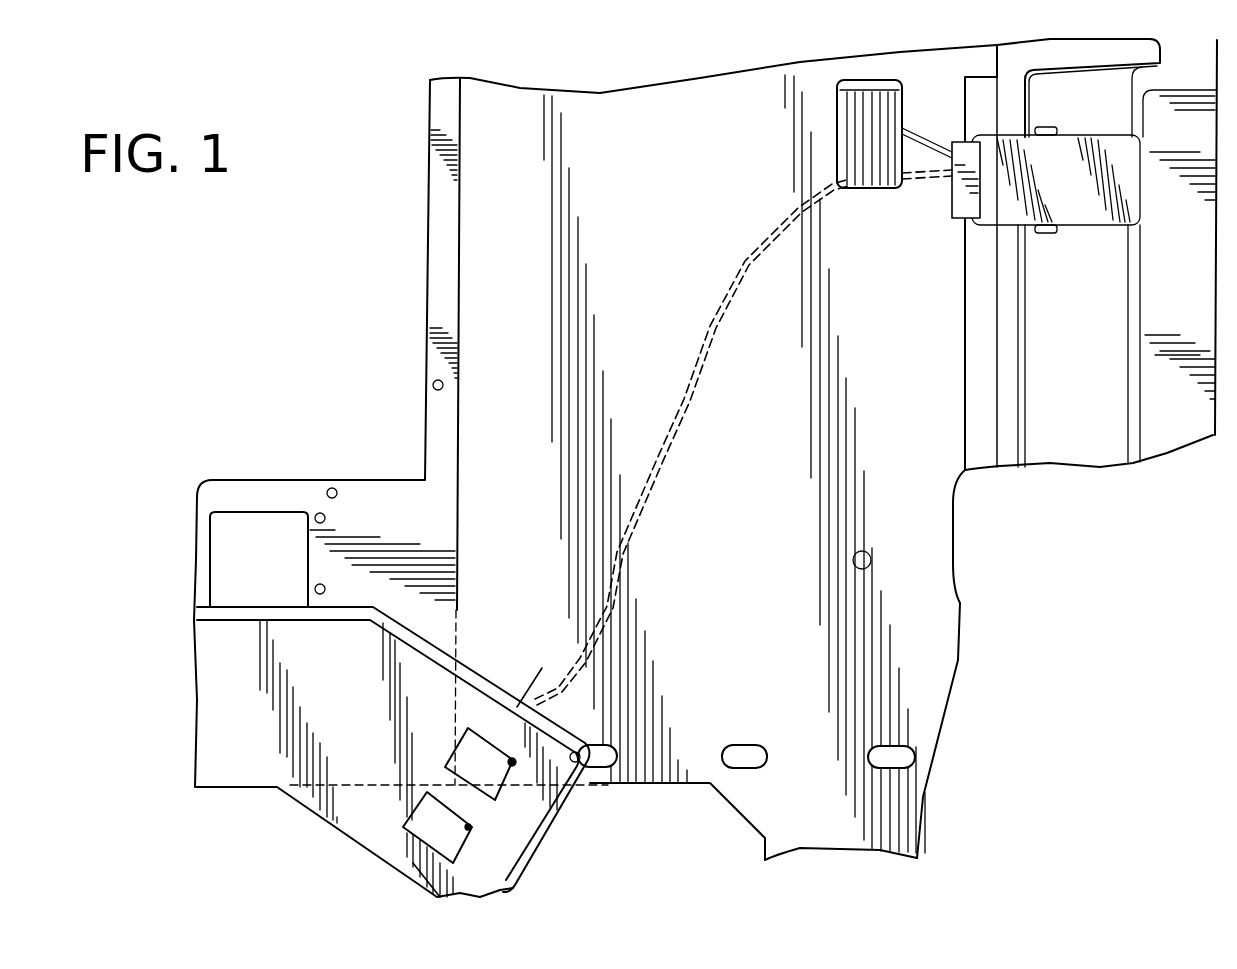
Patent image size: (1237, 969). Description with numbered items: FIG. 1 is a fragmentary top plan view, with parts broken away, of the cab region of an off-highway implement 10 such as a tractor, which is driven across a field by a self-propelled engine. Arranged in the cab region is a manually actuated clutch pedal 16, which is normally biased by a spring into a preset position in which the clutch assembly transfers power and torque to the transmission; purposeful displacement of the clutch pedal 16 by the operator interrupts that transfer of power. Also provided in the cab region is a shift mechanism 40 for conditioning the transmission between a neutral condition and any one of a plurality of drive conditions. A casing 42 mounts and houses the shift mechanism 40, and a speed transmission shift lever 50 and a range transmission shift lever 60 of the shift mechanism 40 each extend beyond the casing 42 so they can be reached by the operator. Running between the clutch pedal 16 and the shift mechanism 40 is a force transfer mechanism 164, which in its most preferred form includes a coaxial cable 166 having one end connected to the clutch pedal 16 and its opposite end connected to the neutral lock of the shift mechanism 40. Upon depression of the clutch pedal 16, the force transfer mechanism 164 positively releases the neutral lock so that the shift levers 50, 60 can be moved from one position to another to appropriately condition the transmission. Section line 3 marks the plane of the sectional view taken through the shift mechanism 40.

The off-highway implement 10 is at (290, 300).
The clutch pedal 16 is at (870, 158).
The force transfer mechanism 164 is at (706, 318).
The coaxial cable 166 is at (688, 402).
The shift mechanism 40 is at (498, 822).
The casing 42 is at (360, 632).
The speed transmission shift lever 50 is at (470, 832).
The range transmission shift lever 60 is at (514, 762).
The section line 3- 3 is at (548, 680).